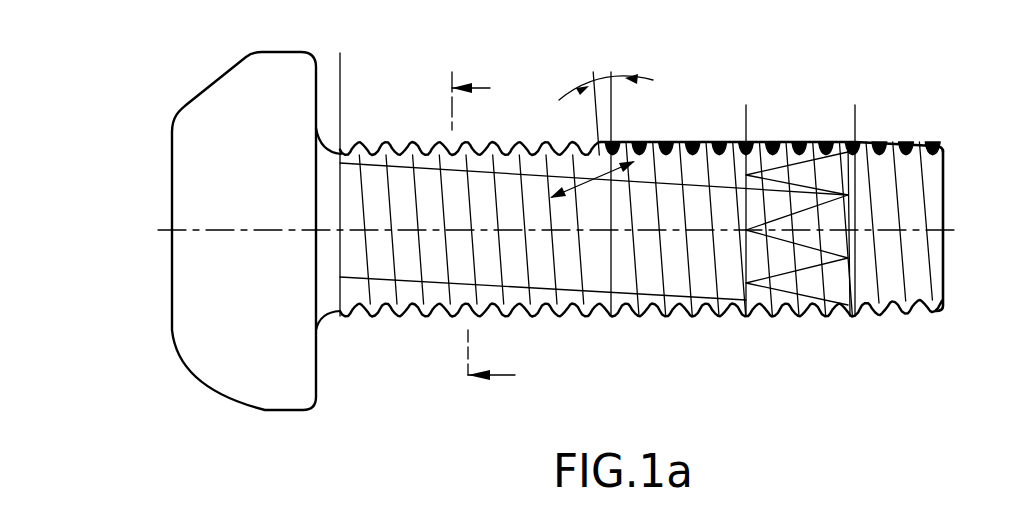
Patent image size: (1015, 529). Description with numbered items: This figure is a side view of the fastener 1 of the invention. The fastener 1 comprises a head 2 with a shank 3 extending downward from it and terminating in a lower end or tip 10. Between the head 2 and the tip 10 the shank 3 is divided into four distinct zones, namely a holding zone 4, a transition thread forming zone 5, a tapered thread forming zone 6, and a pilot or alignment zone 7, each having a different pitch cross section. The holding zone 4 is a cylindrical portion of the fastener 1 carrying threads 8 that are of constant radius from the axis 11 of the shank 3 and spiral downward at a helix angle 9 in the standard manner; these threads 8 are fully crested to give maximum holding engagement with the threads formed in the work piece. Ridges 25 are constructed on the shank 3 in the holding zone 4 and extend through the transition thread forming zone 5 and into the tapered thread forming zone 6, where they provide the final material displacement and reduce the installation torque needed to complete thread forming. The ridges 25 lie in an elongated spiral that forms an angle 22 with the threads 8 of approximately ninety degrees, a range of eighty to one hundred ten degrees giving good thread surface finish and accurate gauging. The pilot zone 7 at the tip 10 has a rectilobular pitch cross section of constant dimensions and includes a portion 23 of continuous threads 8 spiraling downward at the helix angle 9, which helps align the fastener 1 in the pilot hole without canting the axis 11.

The fastener 1 is at (410, 23).
The head 2 is at (233, 385).
The shank 3 is at (943, 325).
The holding zone 4 is at (665, 140).
The transition thread forming zone 5 is at (745, 137).
The tapered thread forming zone 6 is at (855, 105).
The pilot or alignment zone 7 is at (943, 137).
The threads 8 is at (448, 287).
The helix angle 9 is at (600, 84).
The tip 10 is at (945, 189).
The axis 11 is at (270, 229).
The angle 22 is at (582, 168).
The portion of continuous threads 23 is at (908, 269).
The ridges 25 is at (380, 165).